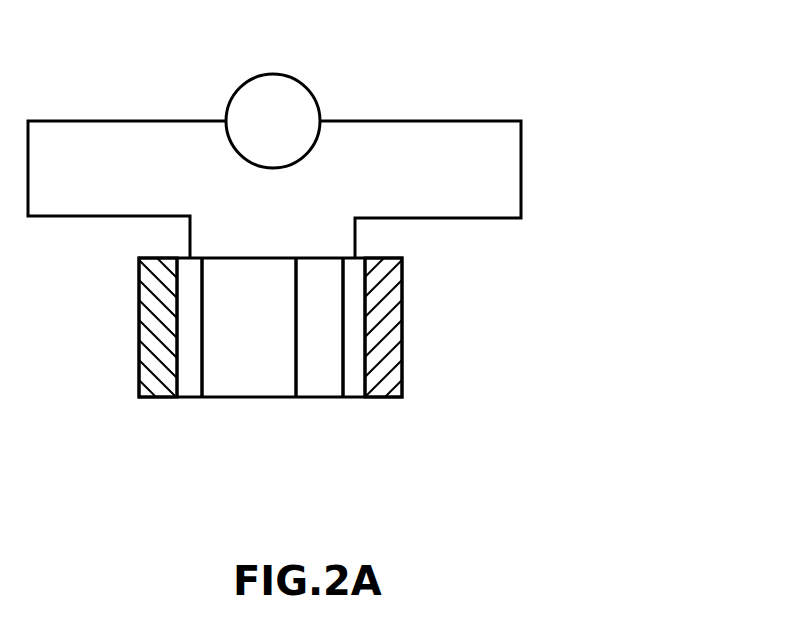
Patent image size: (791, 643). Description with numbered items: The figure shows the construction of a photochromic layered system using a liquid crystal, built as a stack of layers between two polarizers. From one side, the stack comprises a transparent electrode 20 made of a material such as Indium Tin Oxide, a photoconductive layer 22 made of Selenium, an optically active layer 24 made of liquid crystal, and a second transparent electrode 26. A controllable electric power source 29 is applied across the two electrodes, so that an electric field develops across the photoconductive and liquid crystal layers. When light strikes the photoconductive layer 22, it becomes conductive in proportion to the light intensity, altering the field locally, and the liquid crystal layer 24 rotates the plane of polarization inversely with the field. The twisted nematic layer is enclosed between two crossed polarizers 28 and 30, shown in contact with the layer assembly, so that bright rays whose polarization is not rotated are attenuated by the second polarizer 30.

The transparent electrode 20 is at (192, 397).
The photoconductive layer 22 is at (252, 397).
The optically active layer 24 is at (315, 397).
The second transparent electrode 26 is at (353, 397).
The polarizer 28 is at (139, 347).
The controllable electric power source 29 is at (317, 108).
The polarizer 30 is at (402, 353).